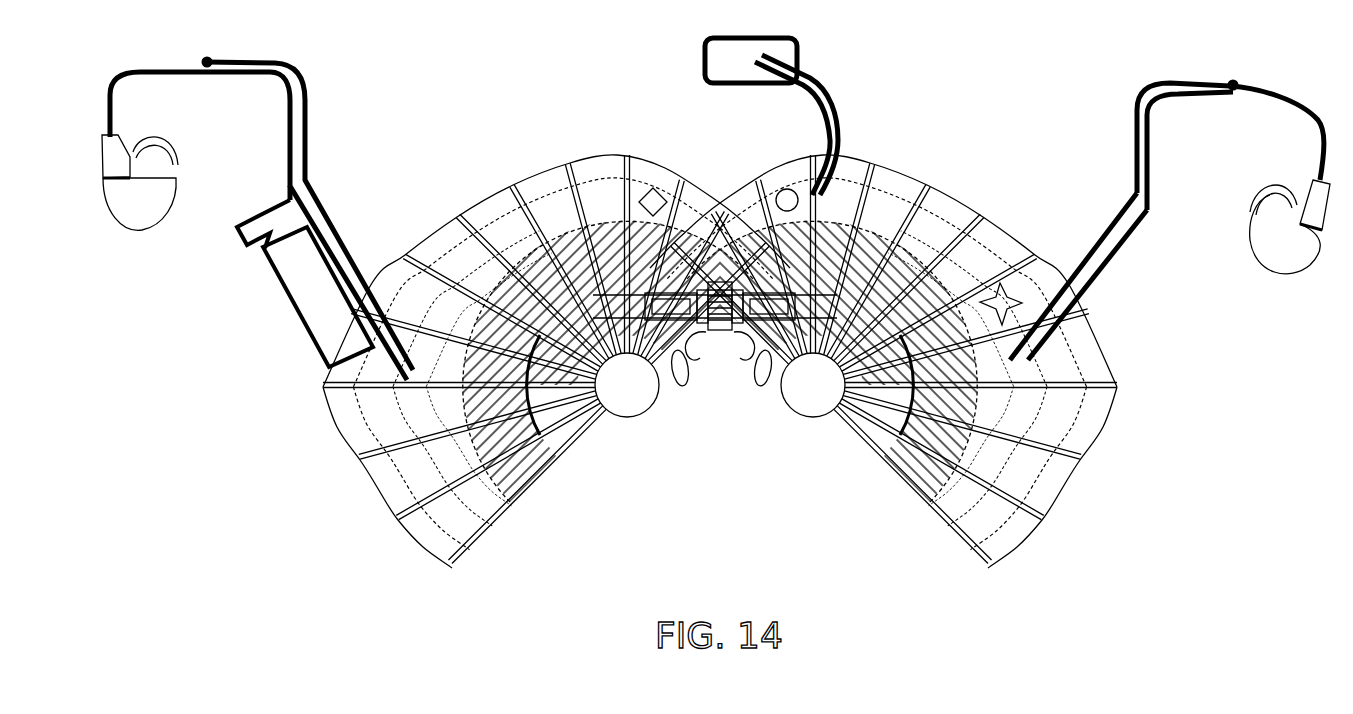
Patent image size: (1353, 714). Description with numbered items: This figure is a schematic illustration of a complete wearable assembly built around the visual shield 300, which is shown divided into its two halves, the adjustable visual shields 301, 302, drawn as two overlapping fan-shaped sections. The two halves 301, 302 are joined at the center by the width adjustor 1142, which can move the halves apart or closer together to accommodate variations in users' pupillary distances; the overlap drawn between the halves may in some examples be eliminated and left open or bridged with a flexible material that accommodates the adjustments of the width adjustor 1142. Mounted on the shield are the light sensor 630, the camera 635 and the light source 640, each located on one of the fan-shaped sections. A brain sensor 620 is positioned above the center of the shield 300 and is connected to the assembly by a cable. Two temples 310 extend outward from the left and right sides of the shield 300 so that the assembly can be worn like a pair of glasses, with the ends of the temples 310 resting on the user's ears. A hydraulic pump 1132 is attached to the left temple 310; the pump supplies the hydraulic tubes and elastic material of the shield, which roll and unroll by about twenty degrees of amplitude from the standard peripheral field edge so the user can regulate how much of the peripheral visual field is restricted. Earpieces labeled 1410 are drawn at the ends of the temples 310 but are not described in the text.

The visual shield 300 is at (720, 345).
The adjustable visual shield 301 is at (507, 202).
The adjustable visual shield 302 is at (933, 197).
The temple 310 is at (310, 150).
The brain sensor 620 is at (723, 65).
The light sensor 630 is at (645, 195).
The camera 635 is at (783, 197).
The light source 640 is at (1008, 280).
The hydraulic pump 1132 is at (295, 315).
The width adjustor 1142 is at (714, 335).
The earbud 1410 is at (137, 212).